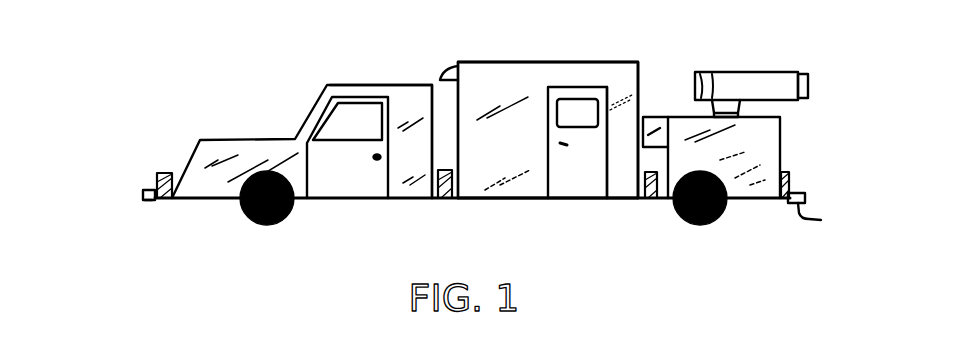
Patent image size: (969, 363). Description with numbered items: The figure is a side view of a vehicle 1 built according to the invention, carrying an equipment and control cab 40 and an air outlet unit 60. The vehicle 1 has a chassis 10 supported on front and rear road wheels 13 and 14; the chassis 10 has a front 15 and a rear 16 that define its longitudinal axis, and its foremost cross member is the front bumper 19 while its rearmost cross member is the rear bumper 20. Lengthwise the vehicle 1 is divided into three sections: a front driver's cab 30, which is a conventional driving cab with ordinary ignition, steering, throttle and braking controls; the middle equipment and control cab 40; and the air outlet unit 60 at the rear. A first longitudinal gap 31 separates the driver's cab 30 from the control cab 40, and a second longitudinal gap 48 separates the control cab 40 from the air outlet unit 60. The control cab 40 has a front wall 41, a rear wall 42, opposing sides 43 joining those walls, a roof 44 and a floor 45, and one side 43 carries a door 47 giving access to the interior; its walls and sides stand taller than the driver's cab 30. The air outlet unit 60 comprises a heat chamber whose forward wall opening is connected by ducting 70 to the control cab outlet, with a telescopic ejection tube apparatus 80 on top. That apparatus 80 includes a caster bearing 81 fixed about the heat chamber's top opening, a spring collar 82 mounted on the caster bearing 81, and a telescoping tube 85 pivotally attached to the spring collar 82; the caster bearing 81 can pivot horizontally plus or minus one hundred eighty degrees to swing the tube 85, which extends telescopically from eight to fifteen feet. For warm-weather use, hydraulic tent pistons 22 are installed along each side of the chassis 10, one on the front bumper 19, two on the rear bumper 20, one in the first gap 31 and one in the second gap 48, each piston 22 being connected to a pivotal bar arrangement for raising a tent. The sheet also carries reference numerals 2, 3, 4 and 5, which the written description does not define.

The vehicle 1 is at (467, 133).
The truck chassis 2 is at (465, 153).
The cab 3 is at (331, 83).
The enclosed body 4 is at (528, 62).
The rear compartment 5 is at (780, 140).
The chassis 10 is at (456, 200).
The front road wheels 13 is at (248, 221).
The rear road wheels 14 is at (696, 213).
The front 15 is at (140, 202).
The rear 16 is at (808, 192).
The front bumper 19 is at (150, 205).
The rear bumper 20 is at (827, 225).
The hydraulic tent piston 22 is at (158, 172).
The front driver's cab 30 is at (376, 83).
The first longitudinal gap 31 is at (442, 135).
The equipment and control cab 40 is at (580, 65).
The front wall 41 is at (460, 108).
The rear wall 42 is at (640, 75).
The opposing sides 43 is at (490, 153).
The roof 44 is at (472, 60).
The floor 45 is at (528, 182).
The door 47 is at (586, 175).
The second longitudinal gap 48 is at (610, 187).
The air outlet unit 60 is at (742, 160).
The ducting 70 is at (646, 117).
The telescopic ejection tube apparatus 80 is at (773, 73).
The caster bearing 81 is at (710, 100).
The spring collar 82 is at (718, 100).
The telescoping tube 85 is at (783, 85).